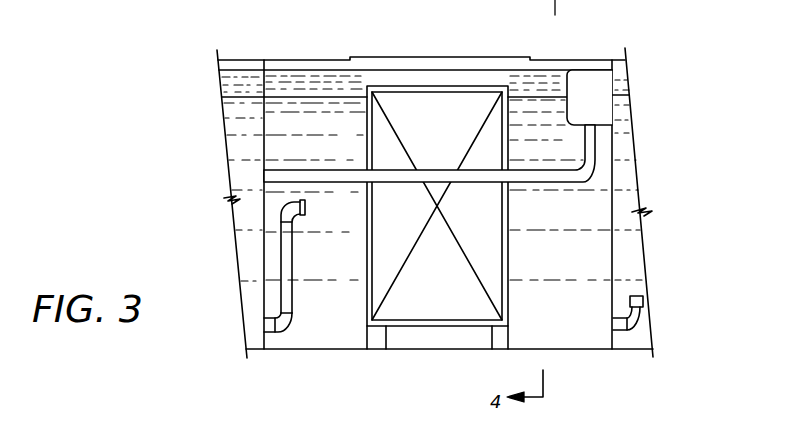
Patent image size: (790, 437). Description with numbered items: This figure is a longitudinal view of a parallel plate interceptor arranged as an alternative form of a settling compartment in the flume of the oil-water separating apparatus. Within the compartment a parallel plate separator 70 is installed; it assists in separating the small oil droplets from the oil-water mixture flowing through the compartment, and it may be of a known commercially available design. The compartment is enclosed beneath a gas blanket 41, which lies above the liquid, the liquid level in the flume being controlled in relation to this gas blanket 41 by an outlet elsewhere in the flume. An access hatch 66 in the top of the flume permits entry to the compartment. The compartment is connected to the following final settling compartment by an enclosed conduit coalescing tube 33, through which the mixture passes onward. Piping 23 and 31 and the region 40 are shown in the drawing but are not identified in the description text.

The horizontal pipe with elbow 23 is at (557, 184).
The left vertical pipe 31 is at (294, 300).
The enclosed conduit coalescing tube 33 is at (643, 303).
The liquid in tank 40 is at (290, 80).
The gas blanket 41 is at (337, 63).
The access hatch 66 is at (440, 56).
The parallel plate separator 70 is at (508, 278).